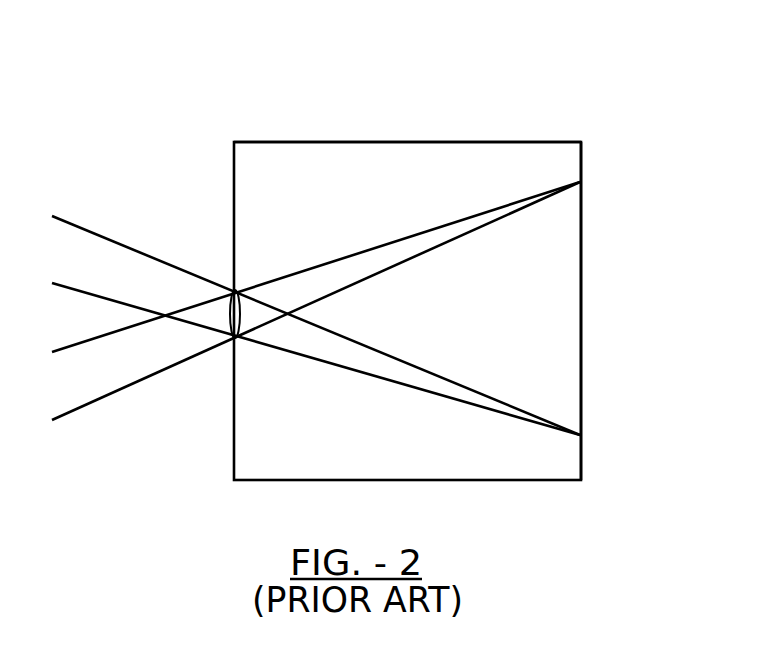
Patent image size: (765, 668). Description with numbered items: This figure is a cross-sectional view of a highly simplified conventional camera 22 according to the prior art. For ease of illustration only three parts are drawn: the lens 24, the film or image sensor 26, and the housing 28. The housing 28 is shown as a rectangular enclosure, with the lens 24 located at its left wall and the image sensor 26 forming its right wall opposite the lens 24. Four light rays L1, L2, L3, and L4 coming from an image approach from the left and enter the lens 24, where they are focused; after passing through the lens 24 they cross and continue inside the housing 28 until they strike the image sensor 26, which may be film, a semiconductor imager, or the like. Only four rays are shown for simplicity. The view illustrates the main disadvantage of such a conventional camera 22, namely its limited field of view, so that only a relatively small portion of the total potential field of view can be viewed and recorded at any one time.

The conventional camera 22 is at (596, 85).
The lens 24 is at (234, 336).
The film or image sensor 26 is at (582, 310).
The housing 28 is at (384, 141).
The light ray L1 is at (300, 321).
The light ray L2 is at (300, 355).
The light ray L3 is at (300, 276).
The light ray L4 is at (300, 311).